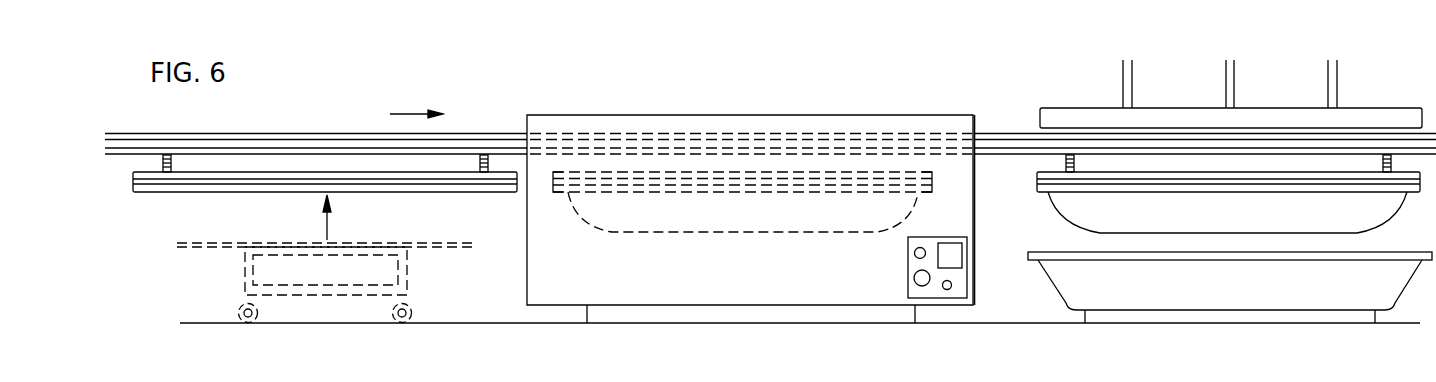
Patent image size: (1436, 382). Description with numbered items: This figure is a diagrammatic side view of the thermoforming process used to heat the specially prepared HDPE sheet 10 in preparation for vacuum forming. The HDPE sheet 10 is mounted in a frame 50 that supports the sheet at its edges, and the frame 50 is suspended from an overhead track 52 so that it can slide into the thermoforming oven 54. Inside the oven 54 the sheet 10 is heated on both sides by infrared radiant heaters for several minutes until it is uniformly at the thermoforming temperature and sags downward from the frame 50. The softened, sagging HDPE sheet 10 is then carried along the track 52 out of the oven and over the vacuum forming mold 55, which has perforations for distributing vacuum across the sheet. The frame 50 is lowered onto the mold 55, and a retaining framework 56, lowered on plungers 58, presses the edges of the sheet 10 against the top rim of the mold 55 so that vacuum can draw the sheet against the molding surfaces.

The HDPE sheet 10 is at (418, 248).
The frame 50 is at (368, 192).
The track 52 is at (225, 133).
The thermoforming oven 54 is at (568, 115).
The vacuum forming mold 55 is at (1103, 257).
The retaining framework 56 is at (1147, 108).
The plungers 58 is at (1338, 80).